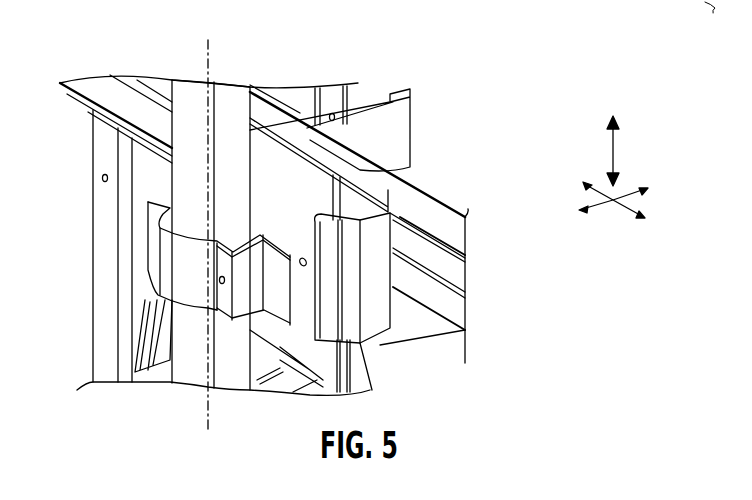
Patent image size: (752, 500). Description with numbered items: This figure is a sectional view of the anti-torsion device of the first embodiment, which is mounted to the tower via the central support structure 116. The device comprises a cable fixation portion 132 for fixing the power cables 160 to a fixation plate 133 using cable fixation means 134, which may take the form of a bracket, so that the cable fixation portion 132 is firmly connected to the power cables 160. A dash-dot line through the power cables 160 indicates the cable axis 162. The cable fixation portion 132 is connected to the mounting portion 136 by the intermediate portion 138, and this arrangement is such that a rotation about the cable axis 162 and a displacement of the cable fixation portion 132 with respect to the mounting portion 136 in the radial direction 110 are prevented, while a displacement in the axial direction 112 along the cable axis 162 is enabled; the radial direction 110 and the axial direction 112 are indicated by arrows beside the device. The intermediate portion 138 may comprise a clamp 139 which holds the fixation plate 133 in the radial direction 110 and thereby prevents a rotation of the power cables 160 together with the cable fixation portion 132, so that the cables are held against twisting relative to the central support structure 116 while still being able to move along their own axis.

The radial direction 110 is at (613, 200).
The axial direction 112 is at (615, 152).
The central support structure 116 is at (457, 307).
The cable fixation portion 132 is at (128, 252).
The fixation plate 133 is at (304, 207).
The cable fixation means 134 is at (172, 280).
The mounting portion 136 is at (405, 343).
The intermediate portion 138 is at (367, 358).
The clamp 139 is at (353, 262).
The power cables 160 is at (232, 100).
The cable axis 162 is at (208, 60).